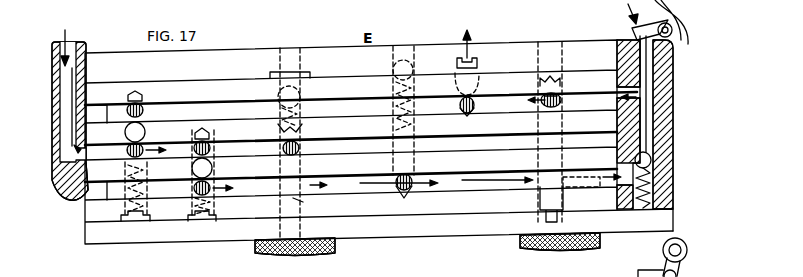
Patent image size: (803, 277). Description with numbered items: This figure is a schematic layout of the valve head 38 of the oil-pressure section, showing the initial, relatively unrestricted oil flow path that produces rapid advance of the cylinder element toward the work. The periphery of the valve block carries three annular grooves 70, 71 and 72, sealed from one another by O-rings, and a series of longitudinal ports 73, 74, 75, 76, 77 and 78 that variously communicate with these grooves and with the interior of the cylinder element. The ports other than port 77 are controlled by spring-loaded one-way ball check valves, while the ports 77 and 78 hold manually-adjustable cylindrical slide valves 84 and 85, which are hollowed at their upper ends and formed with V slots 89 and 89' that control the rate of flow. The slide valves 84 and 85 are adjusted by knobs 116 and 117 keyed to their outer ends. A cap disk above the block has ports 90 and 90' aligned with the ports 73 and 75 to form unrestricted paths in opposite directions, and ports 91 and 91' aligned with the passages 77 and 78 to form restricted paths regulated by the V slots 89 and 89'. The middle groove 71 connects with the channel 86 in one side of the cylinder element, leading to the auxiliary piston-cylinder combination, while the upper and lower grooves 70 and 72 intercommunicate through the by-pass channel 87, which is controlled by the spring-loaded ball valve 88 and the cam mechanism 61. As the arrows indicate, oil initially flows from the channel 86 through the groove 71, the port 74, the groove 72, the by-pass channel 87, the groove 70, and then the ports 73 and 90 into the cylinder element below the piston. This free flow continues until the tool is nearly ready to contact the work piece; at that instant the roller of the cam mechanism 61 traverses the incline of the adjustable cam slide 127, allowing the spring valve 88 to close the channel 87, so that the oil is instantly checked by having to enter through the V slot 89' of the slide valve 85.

The valve head 38 is at (721, 160).
The cam mechanism 61 is at (660, 255).
The annular groove 70 is at (107, 113).
The annular groove 71 is at (74, 192).
The annular groove 72 is at (118, 193).
The port 73 is at (483, 65).
The port 74 is at (222, 170).
The port 75 is at (412, 99).
The port 76 is at (151, 134).
The port 77 is at (540, 106).
The port 78 is at (312, 148).
The slide valve 84 is at (562, 192).
The slide valve 85 is at (303, 202).
The channel 86 is at (58, 124).
The by-pass channel 87 is at (652, 128).
The ball valve 88 is at (646, 162).
The V slot 89 is at (574, 82).
The V slot 89' is at (315, 129).
The port 90 is at (487, 65).
The port 90' is at (421, 97).
The port 91 is at (564, 120).
The port 91' is at (298, 134).
The knob 116 is at (592, 244).
The knob 117 is at (322, 252).
The cam slide 127 is at (686, 42).